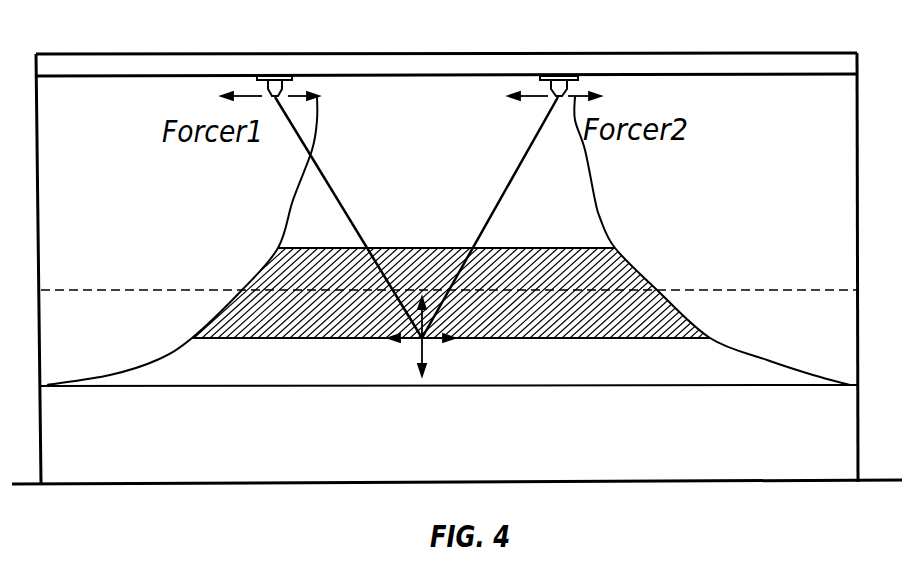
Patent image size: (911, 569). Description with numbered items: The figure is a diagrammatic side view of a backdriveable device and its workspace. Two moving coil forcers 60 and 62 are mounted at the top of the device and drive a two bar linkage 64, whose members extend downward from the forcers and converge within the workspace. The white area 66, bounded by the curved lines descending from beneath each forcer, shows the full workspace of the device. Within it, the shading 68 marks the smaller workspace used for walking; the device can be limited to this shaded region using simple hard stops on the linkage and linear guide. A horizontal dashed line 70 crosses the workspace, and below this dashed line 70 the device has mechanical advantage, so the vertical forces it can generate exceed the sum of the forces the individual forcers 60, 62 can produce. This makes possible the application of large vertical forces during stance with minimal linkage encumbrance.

The moving coil forcer 60 is at (277, 76).
The moving coil forcer 62 is at (557, 76).
The two bar linkage 64 is at (291, 146).
The white area 66 is at (601, 218).
The shading 68 is at (538, 339).
The dashed line 70 is at (775, 287).